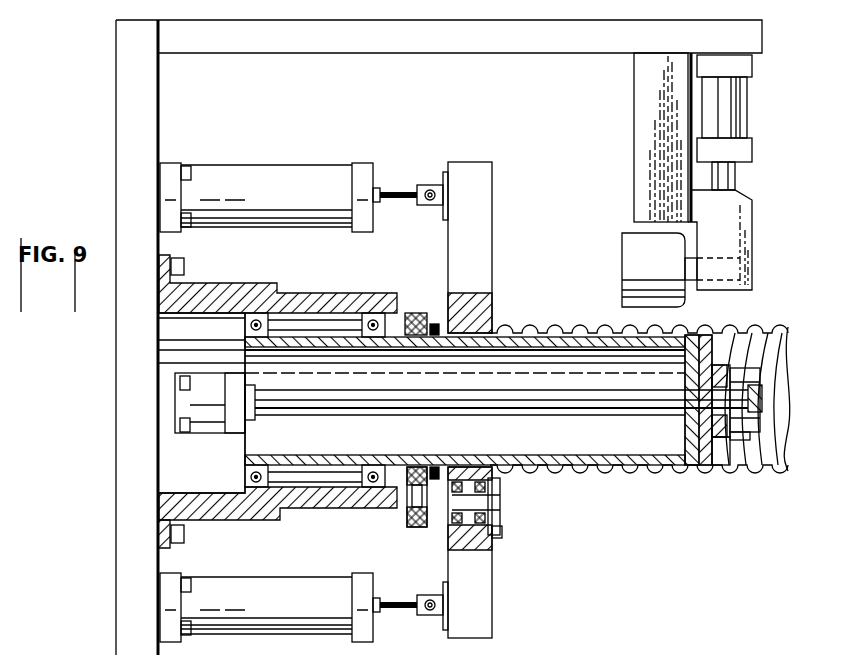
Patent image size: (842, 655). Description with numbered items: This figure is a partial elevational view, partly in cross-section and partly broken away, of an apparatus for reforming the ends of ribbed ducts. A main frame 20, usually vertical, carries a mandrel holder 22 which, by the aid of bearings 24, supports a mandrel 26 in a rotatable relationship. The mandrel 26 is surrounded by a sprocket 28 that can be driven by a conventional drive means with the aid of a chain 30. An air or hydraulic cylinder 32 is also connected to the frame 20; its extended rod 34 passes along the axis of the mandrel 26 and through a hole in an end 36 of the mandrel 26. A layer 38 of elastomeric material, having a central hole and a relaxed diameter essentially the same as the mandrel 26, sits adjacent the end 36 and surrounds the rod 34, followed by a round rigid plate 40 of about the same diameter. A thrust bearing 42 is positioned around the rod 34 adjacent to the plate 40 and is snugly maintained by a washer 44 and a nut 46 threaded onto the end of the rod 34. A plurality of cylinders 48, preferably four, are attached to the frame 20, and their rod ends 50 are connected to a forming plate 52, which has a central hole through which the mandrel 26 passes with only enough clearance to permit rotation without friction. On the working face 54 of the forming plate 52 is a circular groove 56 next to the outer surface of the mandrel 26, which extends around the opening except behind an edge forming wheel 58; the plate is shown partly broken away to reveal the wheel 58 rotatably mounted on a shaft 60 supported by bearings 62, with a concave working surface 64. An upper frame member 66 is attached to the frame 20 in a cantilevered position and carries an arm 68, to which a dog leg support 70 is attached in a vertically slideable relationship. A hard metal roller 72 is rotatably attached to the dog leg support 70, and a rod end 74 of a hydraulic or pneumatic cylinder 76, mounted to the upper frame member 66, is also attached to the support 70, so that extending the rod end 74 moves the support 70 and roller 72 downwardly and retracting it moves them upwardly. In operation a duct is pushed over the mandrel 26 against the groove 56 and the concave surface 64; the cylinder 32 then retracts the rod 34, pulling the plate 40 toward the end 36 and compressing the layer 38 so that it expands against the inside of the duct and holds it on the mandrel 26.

The main frame 20 is at (116, 151).
The mandrel holder 22 is at (158, 306).
The bearings 24 is at (252, 478).
The mandrel 26 is at (323, 460).
The sprocket 28 is at (435, 313).
The chain 30 is at (432, 527).
The air or hydraulic cylinder 32 is at (160, 386).
The rod 34 is at (578, 410).
The end of the mandrel 36 is at (668, 425).
The layer of elastomeric material 38 is at (693, 460).
The plate 40 is at (718, 465).
The thrust bearing 42 is at (722, 367).
The washer 44 is at (728, 440).
The nut 46 is at (737, 388).
The cylinders 48 is at (165, 181).
The rod ends 50 is at (389, 184).
The forming plate 52 is at (462, 172).
The working face 54 is at (495, 242).
The circular groove 56 is at (490, 332).
The edge forming wheel 58 is at (503, 511).
The shaft 60 is at (475, 500).
The bearings 62 is at (485, 487).
The concave working surface 64 is at (497, 528).
The upper frame member 66 is at (293, 45).
The arm 68 is at (633, 110).
The dog leg support 70 is at (742, 213).
The hard metal roller 72 is at (628, 251).
The rod end 74 is at (727, 173).
The hydraulic or pneumatic cylinder 76 is at (717, 107).